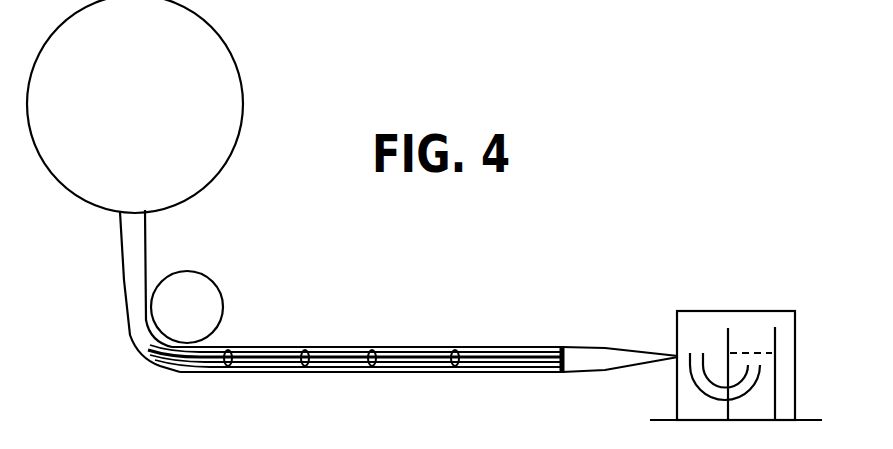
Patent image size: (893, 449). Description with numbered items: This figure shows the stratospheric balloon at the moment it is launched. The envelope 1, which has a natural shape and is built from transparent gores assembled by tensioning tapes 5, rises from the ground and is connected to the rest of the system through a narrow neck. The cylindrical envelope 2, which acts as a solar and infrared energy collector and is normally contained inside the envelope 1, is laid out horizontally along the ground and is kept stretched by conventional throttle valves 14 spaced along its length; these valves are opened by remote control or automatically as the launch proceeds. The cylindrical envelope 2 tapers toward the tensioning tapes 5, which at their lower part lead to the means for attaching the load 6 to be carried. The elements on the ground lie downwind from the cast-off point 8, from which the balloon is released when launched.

The envelope 1 is at (222, 162).
The cast-off point 8 is at (203, 293).
The cylindrical envelope 2 is at (340, 347).
The throttle valves 14 is at (455, 347).
The tensioning tapes 5 is at (612, 347).
The load 6 is at (742, 328).